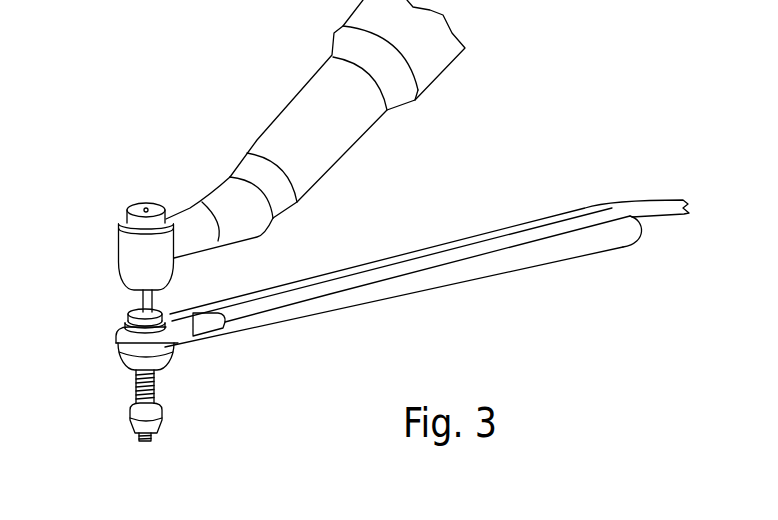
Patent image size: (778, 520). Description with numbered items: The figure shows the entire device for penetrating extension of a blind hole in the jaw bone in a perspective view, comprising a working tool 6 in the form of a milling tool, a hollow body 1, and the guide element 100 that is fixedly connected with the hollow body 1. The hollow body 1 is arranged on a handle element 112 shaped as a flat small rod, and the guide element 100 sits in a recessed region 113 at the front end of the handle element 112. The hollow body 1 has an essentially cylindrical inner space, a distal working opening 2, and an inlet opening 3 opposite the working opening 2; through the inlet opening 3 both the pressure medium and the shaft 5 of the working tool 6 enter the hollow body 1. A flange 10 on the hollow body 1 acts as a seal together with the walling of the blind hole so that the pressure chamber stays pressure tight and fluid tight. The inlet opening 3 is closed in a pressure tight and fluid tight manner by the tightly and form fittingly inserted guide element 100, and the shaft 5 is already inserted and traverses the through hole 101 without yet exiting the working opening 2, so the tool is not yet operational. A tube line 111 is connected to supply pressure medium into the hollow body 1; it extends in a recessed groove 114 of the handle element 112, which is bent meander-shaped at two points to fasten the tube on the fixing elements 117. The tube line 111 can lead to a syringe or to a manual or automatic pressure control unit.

The hollow body 1 is at (135, 389).
The working opening 2 is at (143, 444).
The inlet opening 3 is at (110, 326).
The shaft 5 is at (142, 303).
The working tool 6 is at (322, 124).
The flange 10 is at (143, 417).
The guide element 100 is at (163, 350).
The through hole 101 is at (160, 313).
The tube line 111 is at (663, 210).
The handle element 112 is at (578, 240).
The recessed region 113 is at (207, 322).
The recessed groove 114 is at (355, 286).
The fixing elements 117 is at (366, 272).